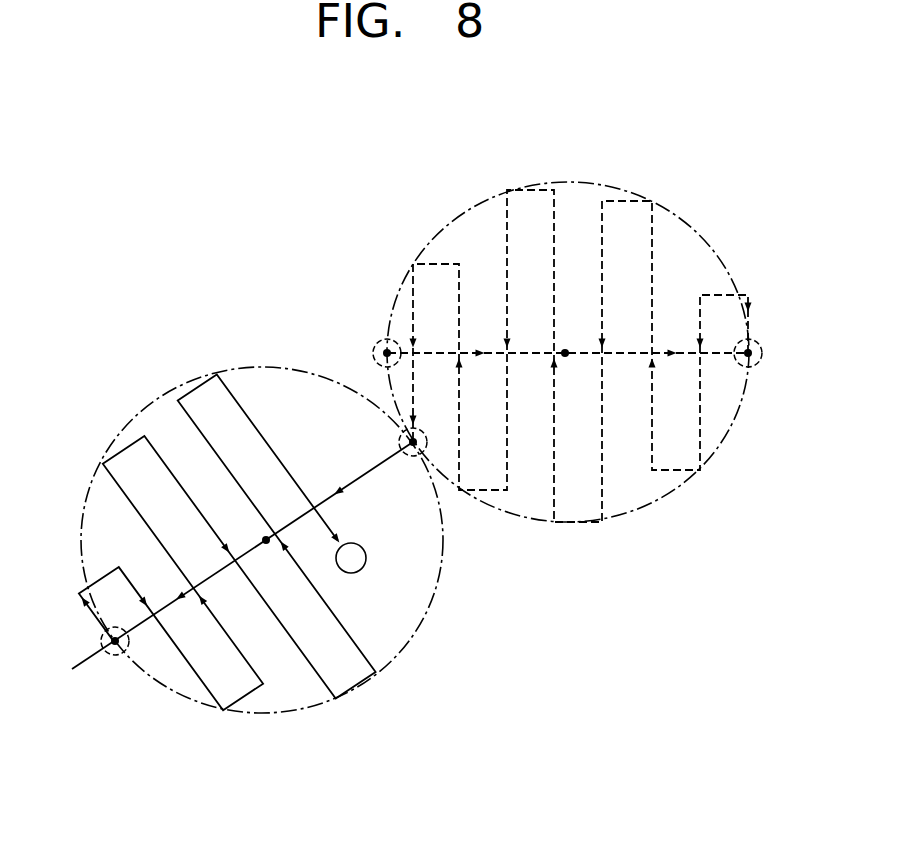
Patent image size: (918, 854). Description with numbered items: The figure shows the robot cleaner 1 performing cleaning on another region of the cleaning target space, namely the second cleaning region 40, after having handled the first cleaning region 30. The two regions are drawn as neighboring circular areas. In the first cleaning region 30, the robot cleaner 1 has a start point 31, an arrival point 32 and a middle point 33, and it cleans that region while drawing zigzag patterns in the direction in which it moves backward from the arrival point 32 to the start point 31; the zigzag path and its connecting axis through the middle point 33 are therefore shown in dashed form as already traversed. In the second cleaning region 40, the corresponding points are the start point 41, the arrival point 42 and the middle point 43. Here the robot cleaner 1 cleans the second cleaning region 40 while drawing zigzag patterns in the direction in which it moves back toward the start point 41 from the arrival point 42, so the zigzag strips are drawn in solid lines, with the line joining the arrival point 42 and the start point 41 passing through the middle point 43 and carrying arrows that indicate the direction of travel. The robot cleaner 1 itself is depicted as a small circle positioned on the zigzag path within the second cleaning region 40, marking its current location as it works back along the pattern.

The robot cleaner 1 is at (358, 565).
The first cleaning region 30 is at (592, 307).
The start point 31 is at (386, 353).
The arrival point 32 is at (749, 353).
The middle point 33 is at (565, 356).
The second cleaning region 40 is at (238, 517).
The start point 41 is at (413, 449).
The arrival point 42 is at (89, 660).
The middle point 43 is at (267, 544).